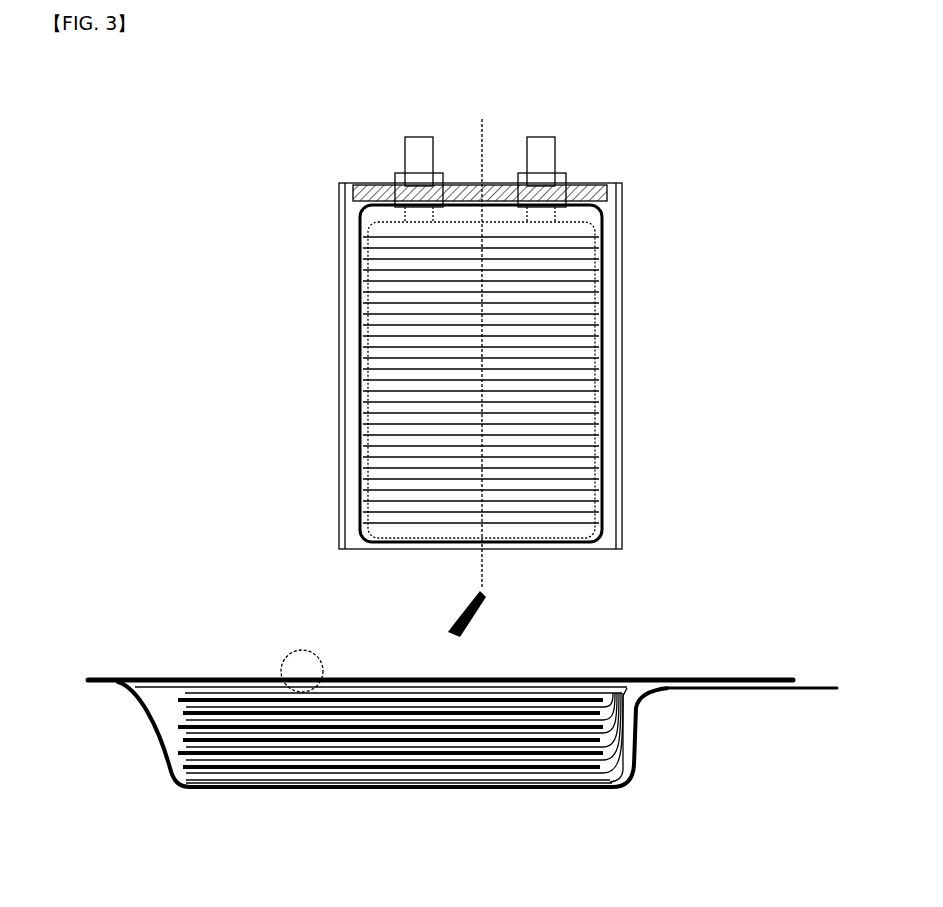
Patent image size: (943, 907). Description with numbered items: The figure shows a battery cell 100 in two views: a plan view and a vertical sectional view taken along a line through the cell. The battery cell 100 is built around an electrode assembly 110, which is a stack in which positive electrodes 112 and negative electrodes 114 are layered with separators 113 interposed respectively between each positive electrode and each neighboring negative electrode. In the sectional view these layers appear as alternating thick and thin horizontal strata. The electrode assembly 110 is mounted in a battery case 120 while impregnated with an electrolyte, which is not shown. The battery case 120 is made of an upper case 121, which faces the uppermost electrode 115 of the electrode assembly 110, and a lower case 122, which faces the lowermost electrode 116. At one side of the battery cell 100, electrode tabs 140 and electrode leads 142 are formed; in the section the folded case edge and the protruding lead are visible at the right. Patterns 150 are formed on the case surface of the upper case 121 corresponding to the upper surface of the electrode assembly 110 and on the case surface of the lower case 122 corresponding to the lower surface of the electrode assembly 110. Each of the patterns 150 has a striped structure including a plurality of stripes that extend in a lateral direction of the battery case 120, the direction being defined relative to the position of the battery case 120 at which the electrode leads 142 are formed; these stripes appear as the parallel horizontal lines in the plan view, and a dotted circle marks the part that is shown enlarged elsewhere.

The battery cell 100 is at (178, 172).
The electrode assembly 110 is at (360, 328).
The positive electrodes 112 is at (178, 748).
The separators 113 is at (182, 757).
The negative electrodes 114 is at (186, 770).
The uppermost electrode 115 is at (180, 693).
The lowermost electrode 116 is at (182, 790).
The battery case 120 is at (336, 285).
The upper case 121 is at (257, 678).
The lower case 122 is at (320, 790).
The electrode tabs 140 is at (650, 706).
The electrode leads 142 is at (805, 686).
The patterns 150 is at (360, 396).